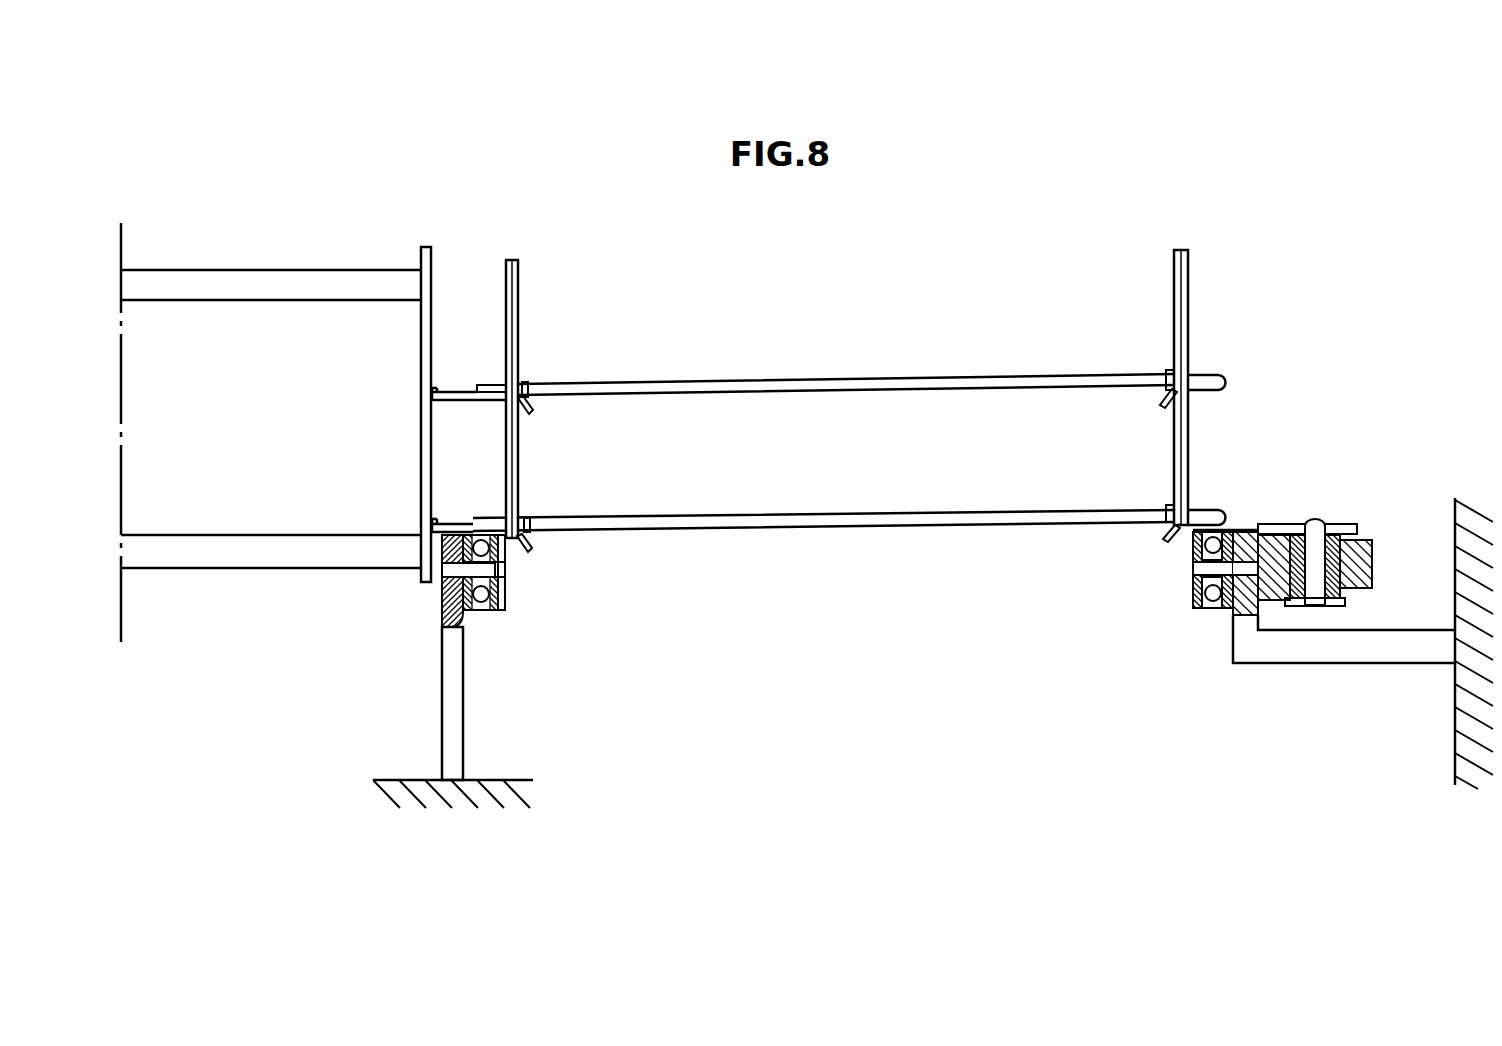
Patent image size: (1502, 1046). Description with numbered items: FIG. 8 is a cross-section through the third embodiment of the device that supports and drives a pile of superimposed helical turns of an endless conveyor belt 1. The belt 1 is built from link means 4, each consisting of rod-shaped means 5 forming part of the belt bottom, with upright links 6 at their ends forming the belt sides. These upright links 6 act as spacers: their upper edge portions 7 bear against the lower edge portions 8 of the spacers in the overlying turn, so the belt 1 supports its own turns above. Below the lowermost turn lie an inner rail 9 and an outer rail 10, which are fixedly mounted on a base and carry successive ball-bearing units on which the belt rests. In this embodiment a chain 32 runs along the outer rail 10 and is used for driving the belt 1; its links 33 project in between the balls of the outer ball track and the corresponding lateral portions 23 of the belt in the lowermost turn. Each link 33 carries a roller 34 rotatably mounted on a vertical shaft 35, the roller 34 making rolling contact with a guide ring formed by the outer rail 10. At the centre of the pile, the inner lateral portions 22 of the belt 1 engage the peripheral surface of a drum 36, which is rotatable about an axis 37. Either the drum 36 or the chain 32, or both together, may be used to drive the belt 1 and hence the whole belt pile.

The belt 1 is at (823, 406).
The link means 4 is at (942, 394).
The rod-shaped means 5 is at (995, 381).
The upright links 6 is at (1190, 280).
The upper edge portions 7 is at (1190, 390).
The lower edge portions 8 is at (1192, 377).
The rail 9 is at (452, 690).
The outer rail 10 is at (1240, 640).
The inner lateral portions 22 is at (458, 530).
The lateral portions 23 is at (1210, 512).
The chain 32 is at (1372, 529).
The links 33 is at (1266, 533).
The roller 34 is at (1373, 570).
The vertical shaft 35 is at (1316, 606).
The drum 36 is at (432, 270).
The axis 37 is at (122, 241).